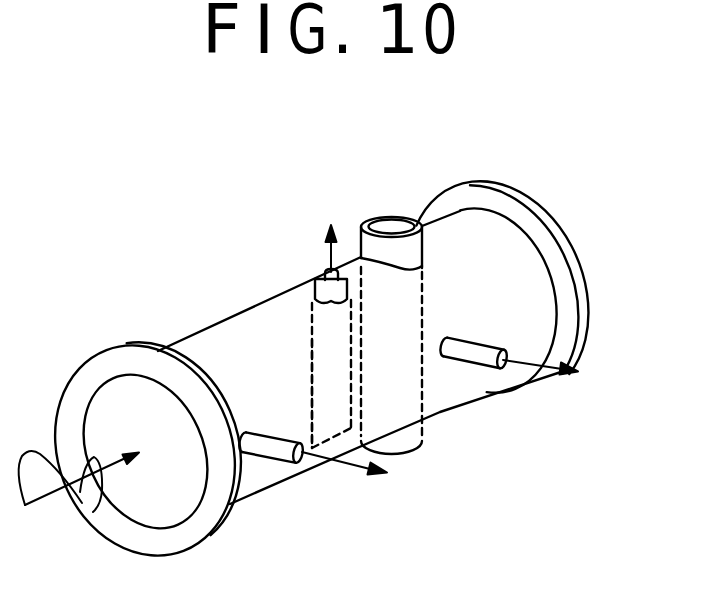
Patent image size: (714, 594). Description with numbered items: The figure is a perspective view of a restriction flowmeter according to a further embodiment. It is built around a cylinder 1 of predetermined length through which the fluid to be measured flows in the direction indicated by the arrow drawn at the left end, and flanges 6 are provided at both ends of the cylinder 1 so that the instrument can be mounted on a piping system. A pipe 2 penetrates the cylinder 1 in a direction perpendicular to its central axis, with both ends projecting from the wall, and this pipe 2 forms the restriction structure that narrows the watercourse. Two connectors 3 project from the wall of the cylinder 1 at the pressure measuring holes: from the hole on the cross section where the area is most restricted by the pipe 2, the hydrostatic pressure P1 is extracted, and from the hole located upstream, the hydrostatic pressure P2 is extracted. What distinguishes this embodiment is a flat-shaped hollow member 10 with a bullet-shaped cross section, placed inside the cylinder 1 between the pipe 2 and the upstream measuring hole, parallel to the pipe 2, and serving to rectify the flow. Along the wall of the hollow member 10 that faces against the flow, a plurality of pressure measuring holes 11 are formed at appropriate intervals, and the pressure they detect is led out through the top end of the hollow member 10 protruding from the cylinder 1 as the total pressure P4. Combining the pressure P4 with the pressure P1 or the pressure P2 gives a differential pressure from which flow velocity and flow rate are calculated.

The cylinder 1 is at (217, 347).
The pipe 2 is at (385, 217).
The connector 3 is at (283, 457).
The flange 6 is at (92, 375).
The hollow member 10 is at (303, 363).
The pressure measuring holes 11 is at (310, 360).
The pressure P1 is at (568, 377).
The pressure P2 is at (369, 473).
The pressure P4 is at (319, 230).